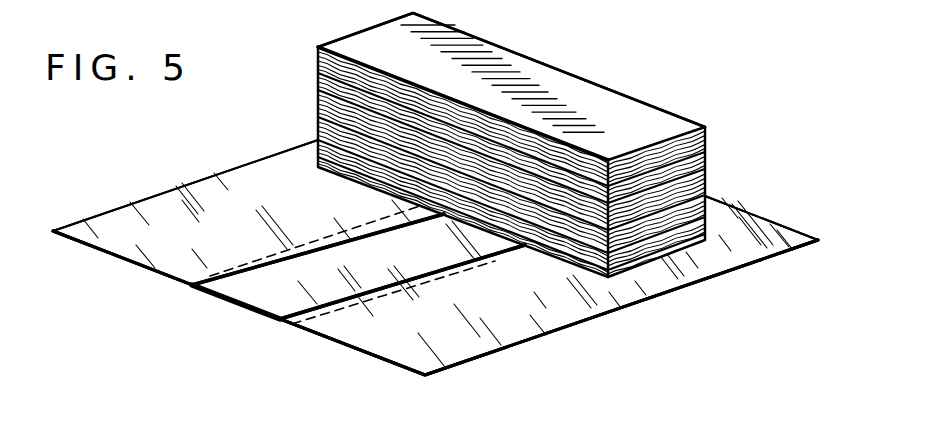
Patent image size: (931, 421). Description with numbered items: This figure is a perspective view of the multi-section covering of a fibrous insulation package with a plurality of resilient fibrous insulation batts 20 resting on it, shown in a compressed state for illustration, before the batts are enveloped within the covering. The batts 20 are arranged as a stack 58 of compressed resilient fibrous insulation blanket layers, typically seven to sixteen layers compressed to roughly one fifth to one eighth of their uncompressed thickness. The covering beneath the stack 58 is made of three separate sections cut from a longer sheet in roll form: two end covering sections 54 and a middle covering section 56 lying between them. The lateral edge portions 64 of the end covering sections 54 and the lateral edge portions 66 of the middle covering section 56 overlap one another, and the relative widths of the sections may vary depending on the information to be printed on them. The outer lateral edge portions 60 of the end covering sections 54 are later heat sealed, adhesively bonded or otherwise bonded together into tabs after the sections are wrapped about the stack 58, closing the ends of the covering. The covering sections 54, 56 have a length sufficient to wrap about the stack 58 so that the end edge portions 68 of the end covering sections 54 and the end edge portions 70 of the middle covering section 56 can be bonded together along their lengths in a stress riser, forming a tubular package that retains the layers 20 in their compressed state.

The resilient fibrous insulation blanket layers or batts 20 is at (706, 132).
The stack of compressed resilient fibrous insulation layers 58 is at (598, 69).
The end covering sections 54 is at (237, 200).
The middle covering section 56 is at (314, 283).
The lateral edge portions of the end covering sections 60 is at (195, 192).
The lateral edge portions of the end covering sections 64 is at (265, 269).
The lateral edge portions of the middle covering section 66 is at (375, 230).
The end edge portions of the end covering sections 68 is at (125, 258).
The end edge portions of the middle covering section 70 is at (261, 313).